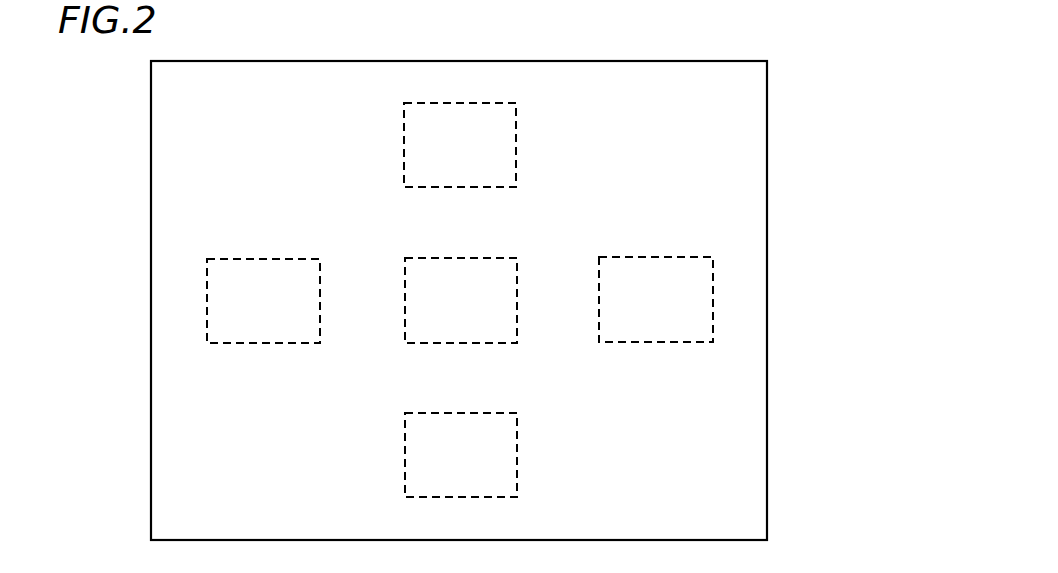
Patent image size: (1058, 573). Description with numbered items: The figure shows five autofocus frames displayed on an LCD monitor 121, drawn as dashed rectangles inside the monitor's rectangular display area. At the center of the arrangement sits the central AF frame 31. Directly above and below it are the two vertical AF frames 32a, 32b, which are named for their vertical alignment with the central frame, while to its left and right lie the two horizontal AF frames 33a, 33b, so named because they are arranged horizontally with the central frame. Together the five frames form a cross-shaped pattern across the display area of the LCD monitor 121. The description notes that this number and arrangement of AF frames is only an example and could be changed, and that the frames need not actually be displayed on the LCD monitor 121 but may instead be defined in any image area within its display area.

The LCD monitor 121 is at (767, 157).
The central AF frame 31 is at (502, 258).
The vertical AF frame 32a is at (516, 147).
The vertical AF frame 32b is at (517, 455).
The horizontal AF frame 33a is at (278, 259).
The horizontal AF frame 33b is at (661, 257).